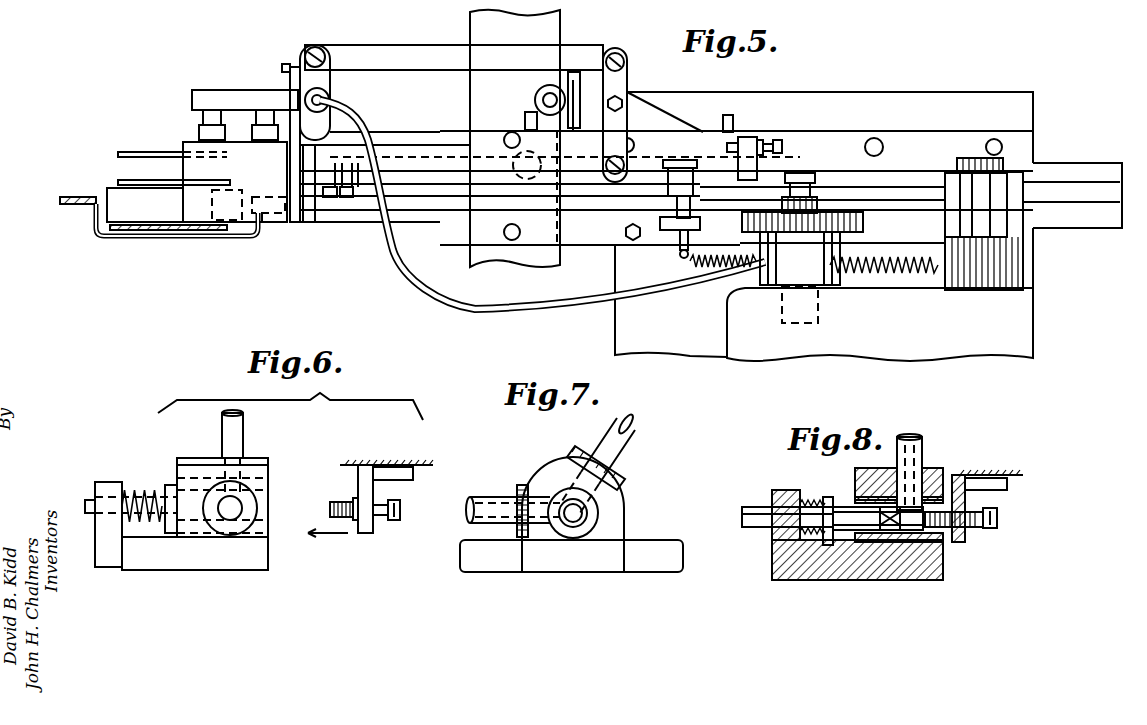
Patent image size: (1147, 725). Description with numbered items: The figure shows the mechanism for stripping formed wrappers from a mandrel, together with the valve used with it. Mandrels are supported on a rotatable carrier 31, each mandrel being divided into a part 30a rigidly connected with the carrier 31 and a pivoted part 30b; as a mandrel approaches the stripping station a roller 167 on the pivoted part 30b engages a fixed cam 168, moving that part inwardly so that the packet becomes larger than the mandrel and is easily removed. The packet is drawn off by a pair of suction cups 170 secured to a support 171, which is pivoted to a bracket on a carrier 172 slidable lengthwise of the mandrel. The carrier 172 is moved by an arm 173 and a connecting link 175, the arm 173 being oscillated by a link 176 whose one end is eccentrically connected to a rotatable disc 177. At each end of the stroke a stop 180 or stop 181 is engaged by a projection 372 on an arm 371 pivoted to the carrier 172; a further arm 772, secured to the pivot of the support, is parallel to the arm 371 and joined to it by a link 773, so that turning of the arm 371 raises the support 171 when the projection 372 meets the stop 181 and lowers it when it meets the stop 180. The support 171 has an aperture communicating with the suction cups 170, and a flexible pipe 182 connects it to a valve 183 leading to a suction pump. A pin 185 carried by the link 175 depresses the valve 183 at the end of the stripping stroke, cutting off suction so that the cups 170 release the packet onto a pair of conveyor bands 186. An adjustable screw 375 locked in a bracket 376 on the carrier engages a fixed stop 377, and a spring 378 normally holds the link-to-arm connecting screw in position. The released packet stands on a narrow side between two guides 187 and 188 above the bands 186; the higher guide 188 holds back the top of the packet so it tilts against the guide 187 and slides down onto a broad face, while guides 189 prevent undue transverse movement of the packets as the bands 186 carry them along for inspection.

In FIG. 5, the link 773 is at (411, 53).
In FIG. 5, the further arm 772 is at (332, 76).
In FIG. 5, the support 171 is at (232, 97).
In FIG. 5, the suction cups 170 is at (277, 112).
In FIG. 5, the guide 188 is at (133, 152).
In FIG. 5, the guide 187 is at (125, 181).
In FIG. 5, the guides 189 is at (84, 197).
In FIG. 5, the conveyor bands 186 is at (198, 234).
In FIG. 5, the mandrel part 30a is at (360, 224).
In FIG. 5, the pivoted mandrel part 30b is at (420, 145).
In FIG. 5, the carrier 172 is at (418, 165).
In FIG. 6, the carrier 172 is at (393, 463).
In FIG. 8, the carrier 172 is at (972, 476).
In FIG. 5, the flexible pipe 182 is at (412, 272).
In FIG. 6, the flexible pipe 182 is at (246, 434).
In FIG. 7, the flexible pipe 182 is at (600, 440).
In FIG. 8, the flexible pipe 182 is at (918, 447).
In FIG. 5, the stop 180 is at (512, 131).
In FIG. 5, the roller 167 is at (545, 86).
In FIG. 5, the carrier 31 is at (548, 22).
In FIG. 5, the fixed cam 168 is at (582, 74).
In FIG. 5, the arm 371 is at (633, 78).
In FIG. 5, the projection 372 is at (637, 100).
In FIG. 5, the stop 181 is at (730, 113).
In FIG. 5, the bracket 376 is at (754, 135).
In FIG. 5, the adjustable screw 375 is at (781, 137).
In FIG. 5, the fixed stop 377 is at (876, 137).
In FIG. 5, the rotatable disc 177 is at (840, 200).
In FIG. 5, the link 176 is at (882, 192).
In FIG. 5, the arm 173 is at (1022, 172).
In FIG. 5, the connecting link 175 is at (712, 228).
In FIG. 5, the spring 378 is at (868, 273).
In FIG. 5, the pin 185 is at (923, 272).
In FIG. 6, the pin 185 is at (342, 500).
In FIG. 8, the pin 185 is at (944, 536).
In FIG. 7, the valve 183 is at (582, 512).
In FIG. 8, the valve 183 is at (944, 556).